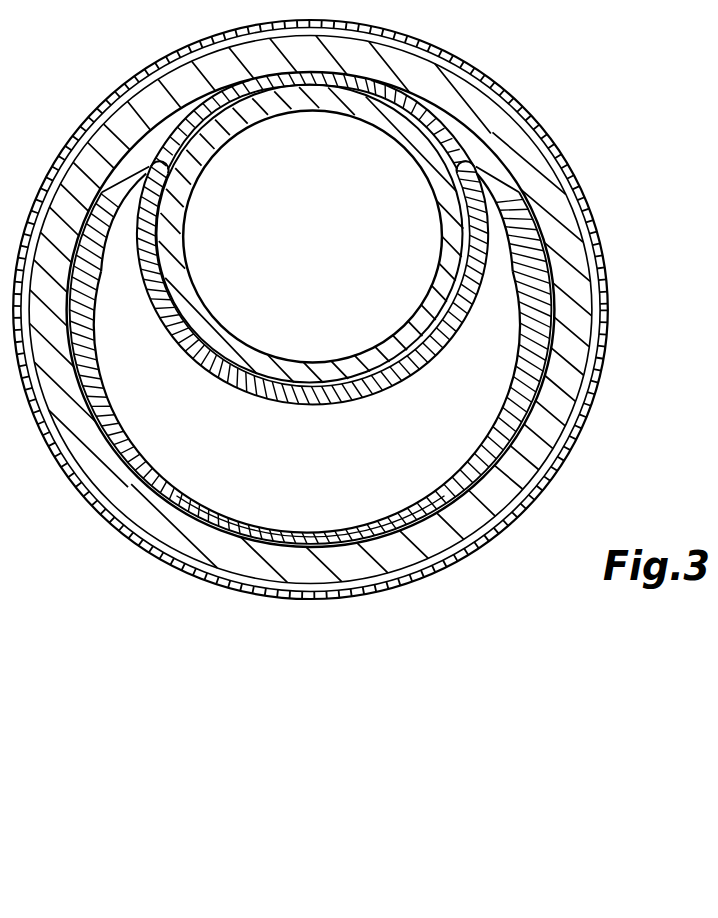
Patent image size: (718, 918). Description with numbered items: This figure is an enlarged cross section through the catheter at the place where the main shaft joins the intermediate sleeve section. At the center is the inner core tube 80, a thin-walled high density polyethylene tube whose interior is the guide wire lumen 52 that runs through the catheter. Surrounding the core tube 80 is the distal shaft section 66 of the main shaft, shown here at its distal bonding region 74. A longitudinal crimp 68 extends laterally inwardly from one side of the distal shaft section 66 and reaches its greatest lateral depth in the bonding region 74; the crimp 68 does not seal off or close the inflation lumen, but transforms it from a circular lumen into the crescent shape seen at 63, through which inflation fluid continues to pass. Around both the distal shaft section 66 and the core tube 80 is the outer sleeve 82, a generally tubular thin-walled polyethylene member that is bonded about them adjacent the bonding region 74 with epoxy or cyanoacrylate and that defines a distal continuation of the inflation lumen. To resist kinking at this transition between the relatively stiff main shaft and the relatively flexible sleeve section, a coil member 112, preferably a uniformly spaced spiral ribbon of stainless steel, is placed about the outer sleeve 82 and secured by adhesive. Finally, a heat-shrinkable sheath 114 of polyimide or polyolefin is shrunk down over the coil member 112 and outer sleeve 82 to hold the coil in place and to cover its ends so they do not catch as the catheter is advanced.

The guide wire lumen 52 is at (326, 205).
The crescent-shaped inflation lumen 63 is at (328, 502).
The distal shaft section 66 is at (497, 437).
The longitudinal crimp 68 is at (482, 289).
The distal bonding region 74 is at (372, 403).
The inner core tube 80 is at (279, 362).
The outer sleeve 82 is at (455, 522).
The coil member 112 is at (588, 197).
The heat-shrinkable sheath 114 is at (553, 133).